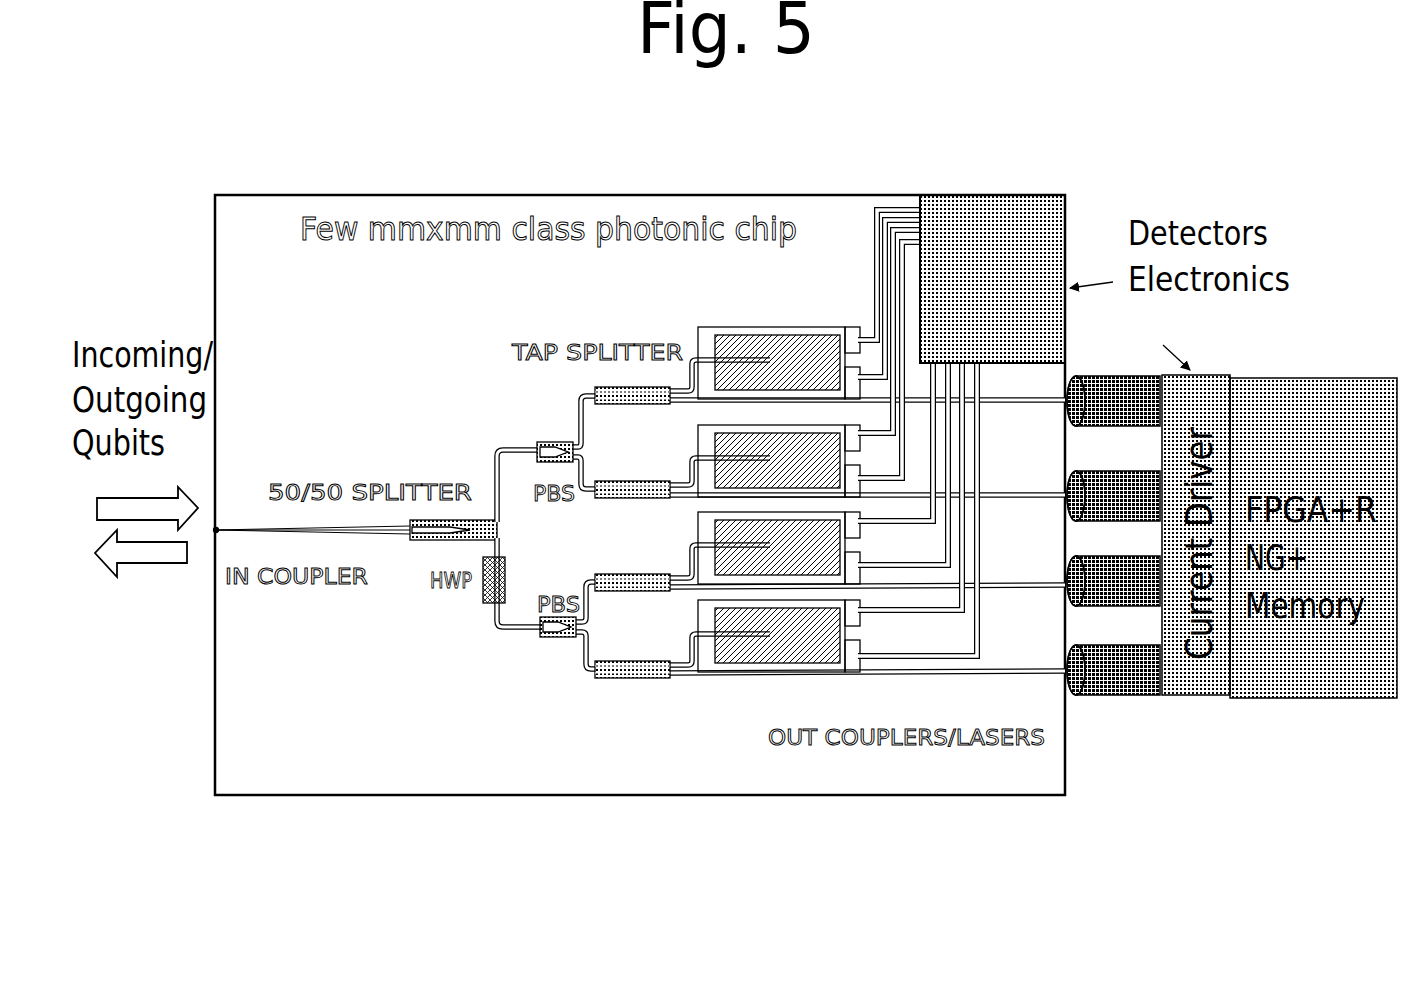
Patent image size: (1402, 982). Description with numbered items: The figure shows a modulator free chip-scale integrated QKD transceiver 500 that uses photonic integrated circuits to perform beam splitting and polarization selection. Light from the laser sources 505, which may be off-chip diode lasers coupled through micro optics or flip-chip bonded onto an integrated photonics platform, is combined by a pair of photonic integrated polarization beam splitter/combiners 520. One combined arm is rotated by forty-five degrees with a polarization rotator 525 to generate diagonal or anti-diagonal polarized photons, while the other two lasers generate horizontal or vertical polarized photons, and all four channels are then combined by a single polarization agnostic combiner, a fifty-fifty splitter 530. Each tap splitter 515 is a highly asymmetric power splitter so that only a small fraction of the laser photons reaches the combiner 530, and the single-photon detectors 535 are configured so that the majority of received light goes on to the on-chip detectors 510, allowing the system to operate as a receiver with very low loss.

The QKD transceiver 500 is at (190, 113).
The laser sources 505 is at (1143, 697).
The detectors 510 is at (933, 210).
The tap splitter 515 is at (632, 685).
The polarization beam splitter/combiner 520 is at (550, 633).
The polarization rotator 525 is at (487, 608).
The 1×2 polarization agnostic combiner (50/50 splitter) 530 is at (410, 522).
The single-photon detectors (SPADs) 535 is at (831, 326).